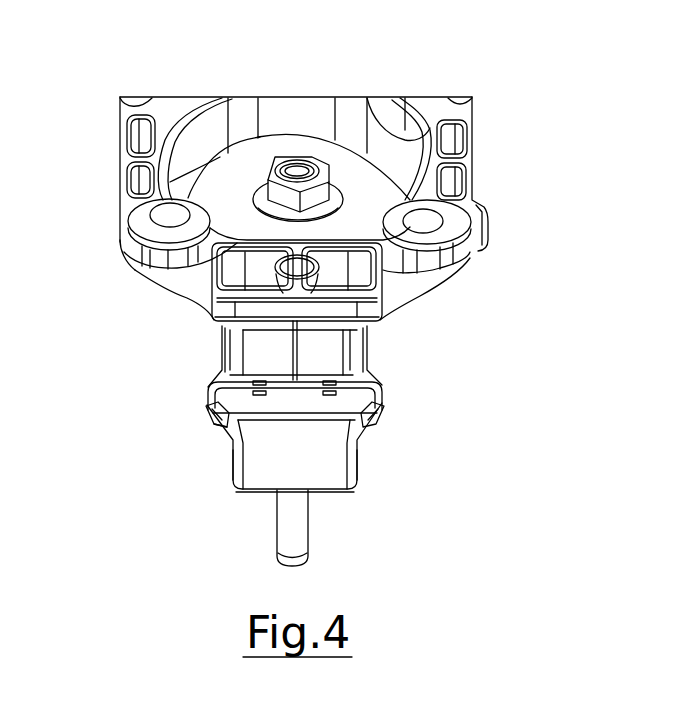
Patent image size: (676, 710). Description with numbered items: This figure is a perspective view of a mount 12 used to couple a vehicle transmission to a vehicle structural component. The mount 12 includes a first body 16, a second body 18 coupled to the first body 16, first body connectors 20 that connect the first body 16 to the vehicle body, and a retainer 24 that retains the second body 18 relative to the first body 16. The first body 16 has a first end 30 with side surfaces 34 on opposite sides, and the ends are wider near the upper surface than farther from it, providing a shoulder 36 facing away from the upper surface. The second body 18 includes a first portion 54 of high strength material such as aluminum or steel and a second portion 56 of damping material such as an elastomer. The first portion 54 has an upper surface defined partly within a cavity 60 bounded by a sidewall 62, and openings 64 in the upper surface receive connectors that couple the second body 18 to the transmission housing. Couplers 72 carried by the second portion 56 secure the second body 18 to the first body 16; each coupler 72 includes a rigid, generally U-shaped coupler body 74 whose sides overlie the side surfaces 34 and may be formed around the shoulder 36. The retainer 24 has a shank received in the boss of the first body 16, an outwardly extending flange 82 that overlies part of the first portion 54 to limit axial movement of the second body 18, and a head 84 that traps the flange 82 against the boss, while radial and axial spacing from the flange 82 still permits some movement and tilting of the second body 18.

The mount 12 is at (510, 107).
The first body 16 is at (362, 488).
The second body 18 is at (388, 83).
The first body connectors 20 is at (288, 528).
The retainer 24 is at (298, 143).
The first end 30 is at (337, 450).
The side surfaces 34 is at (232, 450).
The shoulder 36 is at (220, 405).
The first portion 54 is at (143, 258).
The second portion 56 is at (242, 338).
The cavity 60 is at (238, 127).
The sidewall 62 is at (390, 145).
The openings 64 is at (167, 217).
The couplers 72 is at (390, 365).
The coupler body 74 is at (215, 424).
The flange 82 is at (363, 192).
The head 84 is at (329, 165).